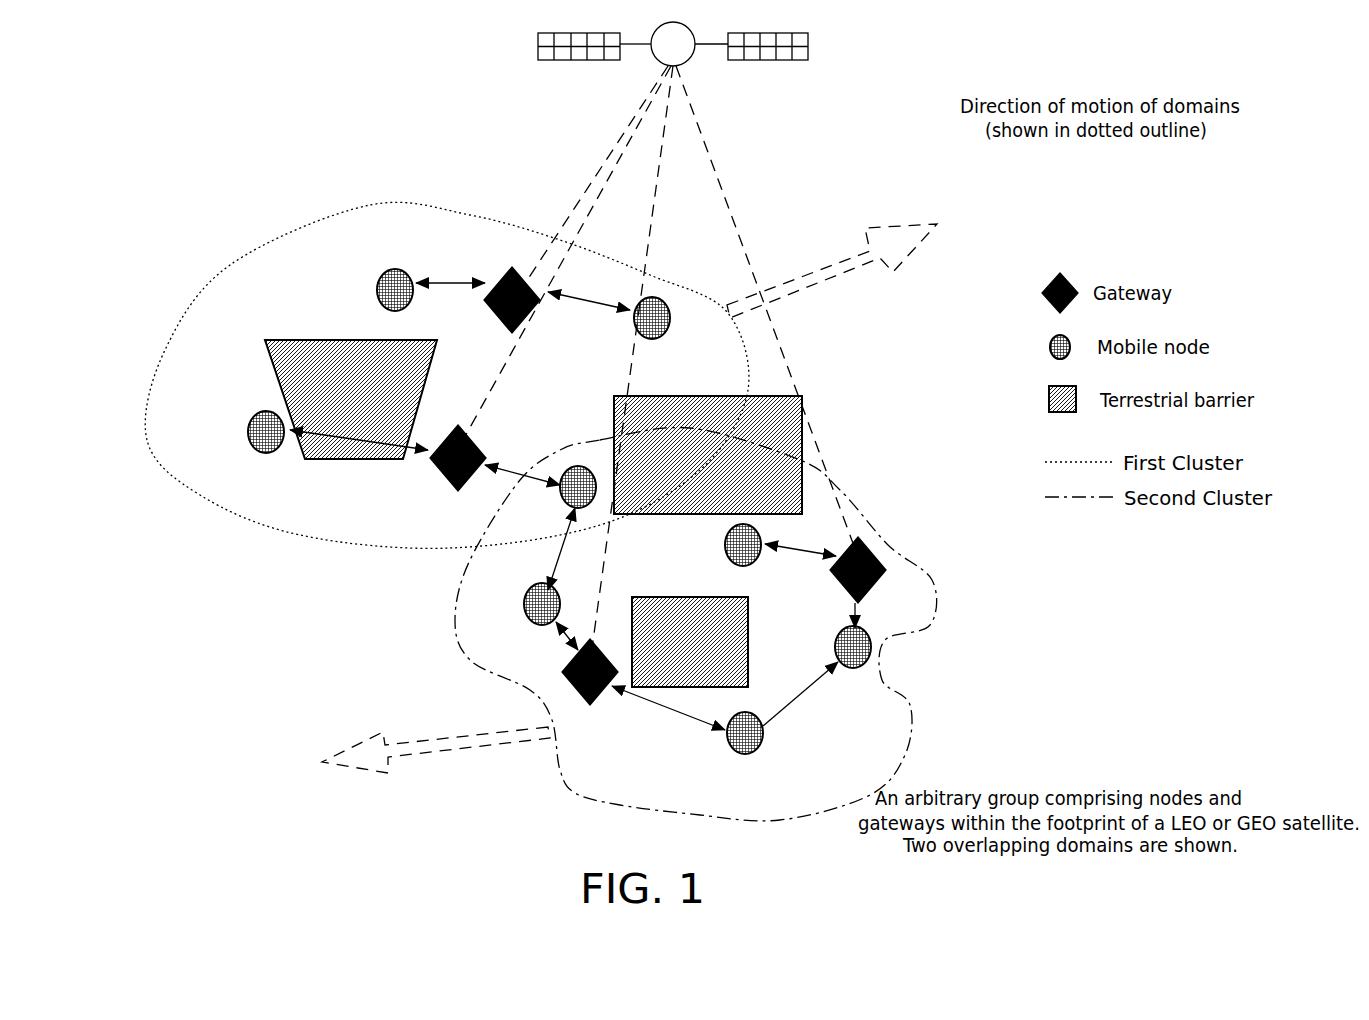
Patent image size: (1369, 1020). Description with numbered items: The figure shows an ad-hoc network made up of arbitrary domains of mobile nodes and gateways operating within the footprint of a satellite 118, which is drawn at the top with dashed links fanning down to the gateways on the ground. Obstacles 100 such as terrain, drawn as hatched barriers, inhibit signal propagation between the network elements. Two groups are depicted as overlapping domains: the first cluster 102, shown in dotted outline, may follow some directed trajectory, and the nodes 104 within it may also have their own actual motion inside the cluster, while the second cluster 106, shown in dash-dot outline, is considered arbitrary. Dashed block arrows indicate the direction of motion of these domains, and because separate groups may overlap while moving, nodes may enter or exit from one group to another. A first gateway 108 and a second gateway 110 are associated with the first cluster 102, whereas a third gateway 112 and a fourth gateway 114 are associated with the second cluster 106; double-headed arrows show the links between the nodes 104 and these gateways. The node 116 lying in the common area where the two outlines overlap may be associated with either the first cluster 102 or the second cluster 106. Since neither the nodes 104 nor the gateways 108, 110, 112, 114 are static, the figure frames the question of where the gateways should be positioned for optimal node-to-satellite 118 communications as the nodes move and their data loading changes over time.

The obstacle 100 is at (266, 380).
The first cluster 102 is at (212, 280).
The node 104 is at (370, 286).
The second cluster 106 is at (915, 692).
The first gateway 108 is at (482, 442).
The second gateway 110 is at (532, 322).
The third gateway 112 is at (606, 710).
The fourth gateway 114 is at (896, 556).
The node in the common area 116 is at (552, 506).
The satellite 118 is at (692, 60).